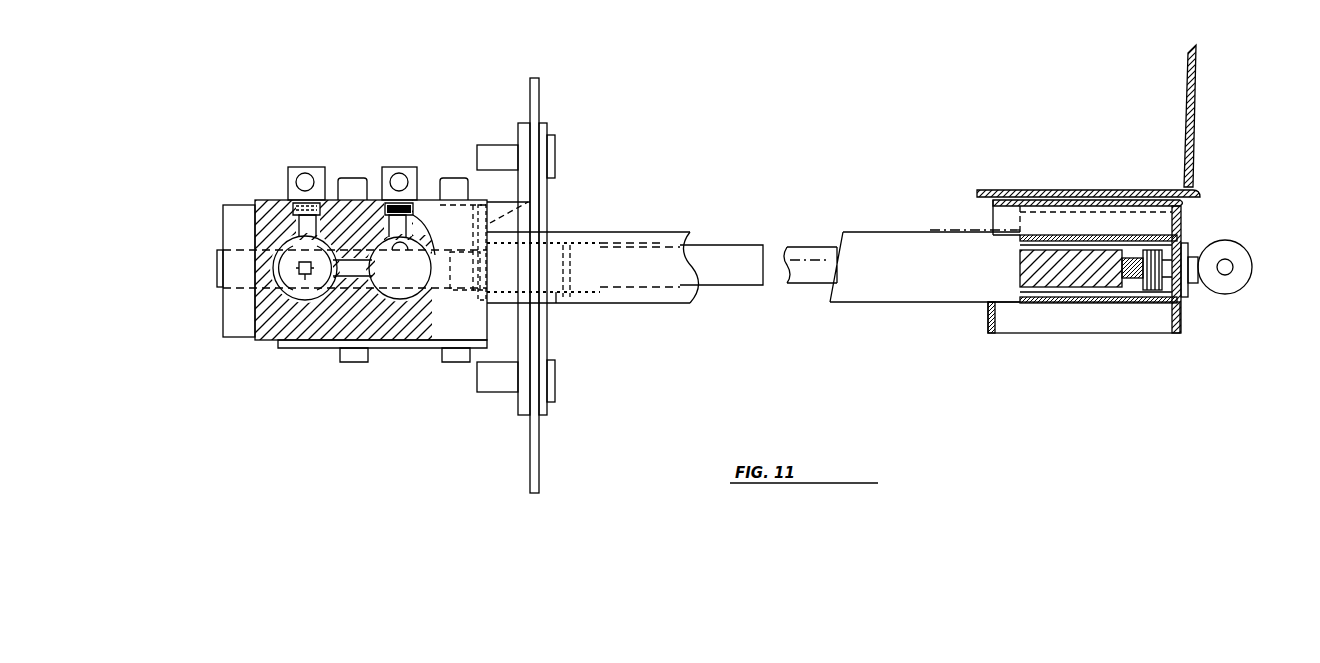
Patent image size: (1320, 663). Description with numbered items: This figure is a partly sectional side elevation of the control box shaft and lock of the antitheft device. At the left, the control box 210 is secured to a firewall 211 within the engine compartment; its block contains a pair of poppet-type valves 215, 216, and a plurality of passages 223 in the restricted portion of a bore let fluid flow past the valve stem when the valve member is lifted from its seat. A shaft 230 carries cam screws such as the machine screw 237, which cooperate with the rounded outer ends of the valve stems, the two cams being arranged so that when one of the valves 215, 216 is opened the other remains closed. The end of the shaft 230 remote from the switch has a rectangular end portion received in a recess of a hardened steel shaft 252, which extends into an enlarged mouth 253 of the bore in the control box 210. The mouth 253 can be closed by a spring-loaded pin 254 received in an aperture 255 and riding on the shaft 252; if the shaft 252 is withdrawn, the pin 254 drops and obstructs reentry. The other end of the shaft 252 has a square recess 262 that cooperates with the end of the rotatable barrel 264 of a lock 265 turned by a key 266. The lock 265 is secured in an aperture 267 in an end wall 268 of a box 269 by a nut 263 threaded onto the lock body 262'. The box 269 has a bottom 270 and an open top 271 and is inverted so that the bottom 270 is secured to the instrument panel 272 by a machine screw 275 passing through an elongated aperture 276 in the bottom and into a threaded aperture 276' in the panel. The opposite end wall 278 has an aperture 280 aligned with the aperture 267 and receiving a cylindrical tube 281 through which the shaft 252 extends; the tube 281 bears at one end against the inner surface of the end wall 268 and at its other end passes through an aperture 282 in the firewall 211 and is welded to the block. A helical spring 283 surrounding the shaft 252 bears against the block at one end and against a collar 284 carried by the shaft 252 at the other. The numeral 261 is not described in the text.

The control box 210 is at (260, 200).
The firewall 211 is at (540, 470).
The poppet-type valve 215 is at (300, 312).
The poppet-type valve 216 is at (407, 293).
The passages 223 is at (291, 250).
The shaft 230 is at (230, 290).
The machine screw 237 is at (388, 250).
The hardened steel shaft 252 is at (722, 287).
The enlarged mouth 253 is at (418, 250).
The spring-loaded pin 254 is at (547, 201).
The aperture 255 is at (496, 167).
The sleeve 261 is at (1100, 208).
The recess 262 is at (1076, 289).
The body 262' is at (1165, 312).
The nut 263 is at (1140, 292).
The rotatable barrel 264 is at (1182, 224).
The lock 265 is at (1192, 291).
The key 266 is at (1247, 256).
The aperture 267 is at (1192, 238).
The end wall 268 is at (1199, 193).
The box 269 is at (988, 332).
The bottom 270 is at (974, 211).
The open top 271 is at (1000, 334).
The instrument panel 272 is at (1092, 187).
The machine screw 275 is at (1028, 186).
The elongated aperture 276 is at (1088, 214).
The threaded aperture 276' is at (977, 171).
The end wall 278 is at (986, 312).
The aperture 280 is at (990, 240).
The cylindrical tube 281 is at (657, 304).
The aperture 282 is at (545, 233).
The helical spring 283 is at (556, 305).
The collar 284 is at (583, 243).